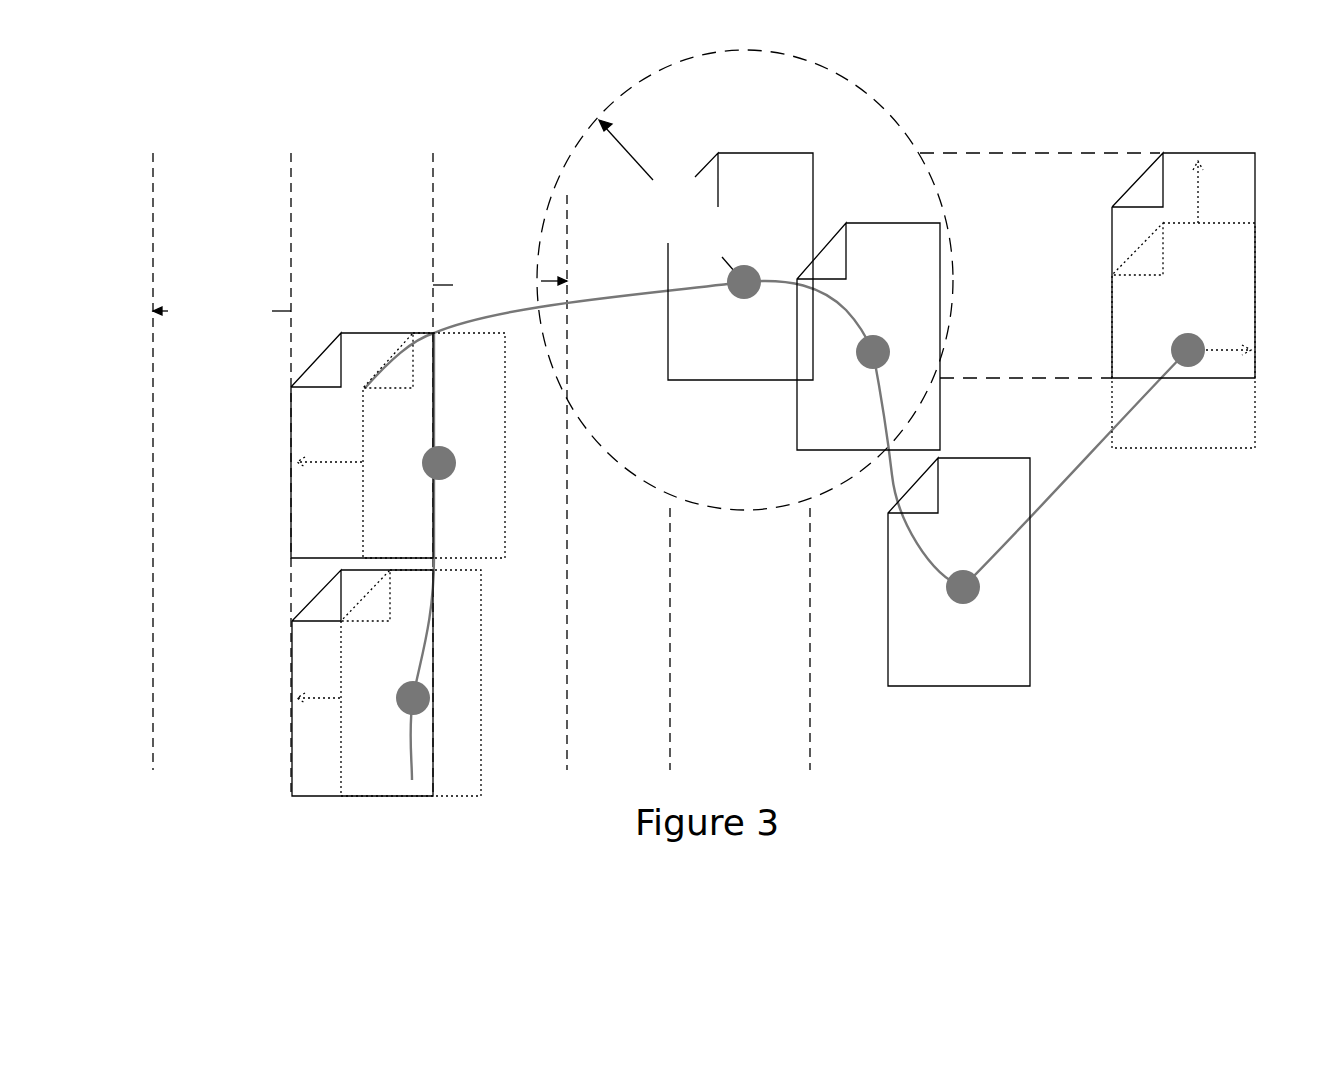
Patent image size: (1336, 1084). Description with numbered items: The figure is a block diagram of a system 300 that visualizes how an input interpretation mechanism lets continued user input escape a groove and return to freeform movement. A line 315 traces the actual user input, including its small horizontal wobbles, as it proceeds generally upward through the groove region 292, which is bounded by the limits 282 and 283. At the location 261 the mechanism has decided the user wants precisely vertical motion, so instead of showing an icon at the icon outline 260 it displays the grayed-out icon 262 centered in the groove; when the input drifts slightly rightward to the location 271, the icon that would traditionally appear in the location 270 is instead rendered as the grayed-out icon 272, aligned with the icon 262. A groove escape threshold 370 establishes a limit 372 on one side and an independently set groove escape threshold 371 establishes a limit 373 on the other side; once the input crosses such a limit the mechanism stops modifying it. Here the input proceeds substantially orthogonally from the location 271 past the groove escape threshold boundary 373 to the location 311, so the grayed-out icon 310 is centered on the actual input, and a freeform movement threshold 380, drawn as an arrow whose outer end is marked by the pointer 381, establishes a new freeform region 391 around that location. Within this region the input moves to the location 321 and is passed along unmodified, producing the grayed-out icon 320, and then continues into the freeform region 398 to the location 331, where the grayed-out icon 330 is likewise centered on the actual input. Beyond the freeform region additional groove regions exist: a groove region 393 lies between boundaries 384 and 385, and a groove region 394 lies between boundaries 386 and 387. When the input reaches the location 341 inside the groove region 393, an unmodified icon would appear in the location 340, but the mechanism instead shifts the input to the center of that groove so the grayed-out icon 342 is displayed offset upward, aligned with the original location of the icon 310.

The system 300 is at (262, 107).
The icon outline 260 is at (384, 683).
The location 261 is at (402, 690).
The grayed-out icon 262 is at (307, 606).
The location 270 is at (421, 433).
The location 271 is at (426, 458).
The grayed-out icon 272 is at (402, 332).
The limit of groove region 282 is at (292, 241).
The limit of groove region 283 is at (433, 216).
The groove region 292 is at (312, 200).
The grayed-out icon 310 is at (763, 266).
The location 311 is at (729, 297).
The line 315 is at (615, 296).
The grayed-out icon 320 is at (868, 322).
The location 321 is at (888, 368).
The grayed-out icon 330 is at (959, 594).
The location 331 is at (979, 600).
The location 340 is at (1159, 325).
The location 341 is at (1177, 336).
The grayed-out icon 342 is at (1133, 186).
The groove escape threshold 370 is at (291, 312).
The groove escape threshold 371 is at (443, 283).
The limit 372 is at (155, 398).
The groove escape threshold boundary 373 is at (568, 668).
The freeform movement threshold 380 is at (634, 155).
The freeform movement threshold boundary 381 is at (620, 98).
The boundary 384 is at (948, 153).
The boundary 385 is at (943, 380).
The boundary 386 is at (811, 670).
The boundary 387 is at (670, 690).
The freeform region 391 is at (818, 95).
The groove region 393 is at (1018, 195).
The groove region 394 is at (799, 711).
The freeform region 398 is at (1168, 698).